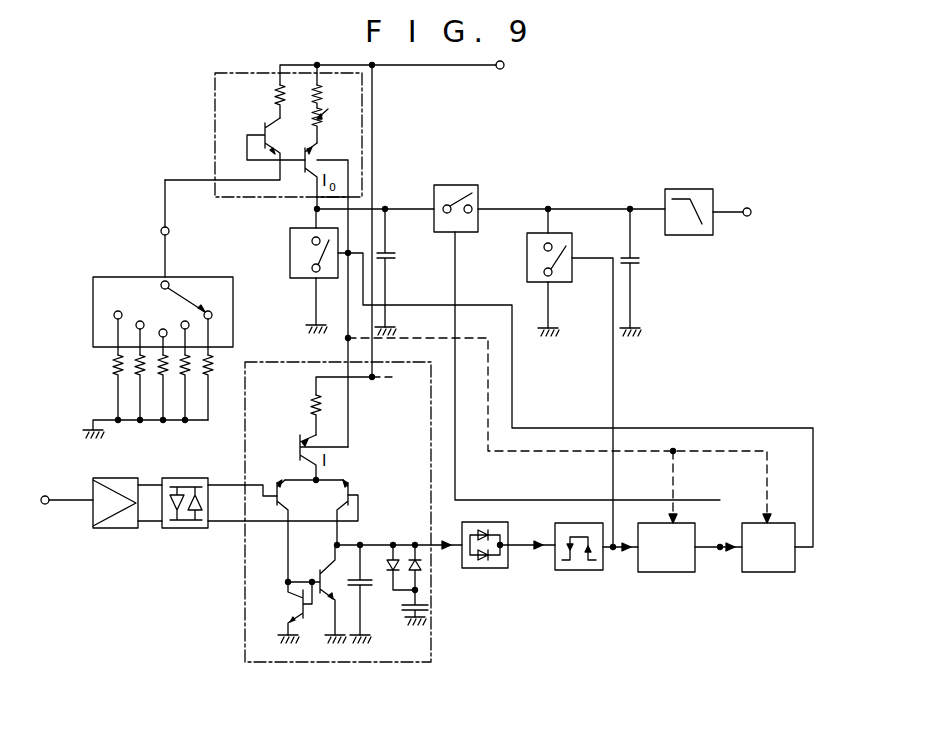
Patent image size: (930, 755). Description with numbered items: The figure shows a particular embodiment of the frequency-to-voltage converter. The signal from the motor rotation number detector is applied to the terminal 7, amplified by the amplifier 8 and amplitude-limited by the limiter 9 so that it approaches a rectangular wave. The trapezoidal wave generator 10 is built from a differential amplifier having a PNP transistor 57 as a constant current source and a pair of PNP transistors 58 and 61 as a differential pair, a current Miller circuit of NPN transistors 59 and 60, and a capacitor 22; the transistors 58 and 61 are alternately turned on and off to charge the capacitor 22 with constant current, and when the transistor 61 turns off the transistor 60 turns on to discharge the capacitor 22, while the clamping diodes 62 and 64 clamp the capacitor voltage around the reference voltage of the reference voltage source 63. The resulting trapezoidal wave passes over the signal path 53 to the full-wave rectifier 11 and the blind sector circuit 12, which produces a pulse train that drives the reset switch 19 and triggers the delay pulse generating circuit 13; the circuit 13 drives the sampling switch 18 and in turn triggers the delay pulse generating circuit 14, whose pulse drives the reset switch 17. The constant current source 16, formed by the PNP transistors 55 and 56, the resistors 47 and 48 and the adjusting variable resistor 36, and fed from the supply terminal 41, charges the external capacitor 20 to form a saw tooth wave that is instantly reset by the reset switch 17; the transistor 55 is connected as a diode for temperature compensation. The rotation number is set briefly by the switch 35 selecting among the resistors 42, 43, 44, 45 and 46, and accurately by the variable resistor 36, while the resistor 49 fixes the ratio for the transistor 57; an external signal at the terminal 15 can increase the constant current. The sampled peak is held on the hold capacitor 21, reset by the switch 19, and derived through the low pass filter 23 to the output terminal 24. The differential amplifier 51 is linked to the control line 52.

The terminal 7 is at (48, 496).
The amplifier 8 is at (112, 478).
The limiter 9 is at (180, 478).
The trapezoidal wave generator 10 is at (405, 362).
The full-wave rectifier 11 is at (488, 522).
The blind sector circuit 12 is at (575, 523).
The delay pulse generating circuit 13 is at (678, 523).
The delay pulse generating circuit 14 is at (772, 523).
The terminal 15 is at (170, 232).
The constant current source 16 is at (362, 110).
The reset switch 17 is at (288, 260).
The sampling switch 18 is at (457, 185).
The reset switch 19 is at (527, 260).
The capacitor 20 is at (399, 260).
The hold capacitor 21 is at (640, 262).
The capacitor 22 is at (375, 585).
The low pass filter 23 is at (680, 189).
The terminal 24 is at (751, 210).
The switch 35 is at (136, 277).
The variable resistor 36 is at (324, 119).
The supply terminal 41 is at (504, 62).
The resistor 42 is at (112, 377).
The resistor 43 is at (130, 383).
The resistor 44 is at (160, 383).
The resistor 45 is at (185, 383).
The resistor 46 is at (212, 378).
The resistor 47 is at (275, 98).
The resistor 48 is at (322, 96).
The resistor 49 is at (310, 408).
The differential amplifier 51 is at (318, 530).
The control line 52 is at (413, 460).
The signal line 53 is at (420, 527).
The PNP transistor 55 is at (262, 155).
The PNP transistor 56 is at (320, 150).
The PNP transistor 57 is at (306, 442).
The PNP transistor 58 is at (285, 497).
The NPN transistor 59 is at (297, 606).
The NPN transistor 60 is at (325, 582).
The PNP transistor 61 is at (345, 507).
The clamping diode 62 is at (400, 566).
The reference voltage source 63 is at (430, 608).
The clamping diode 64 is at (398, 578).